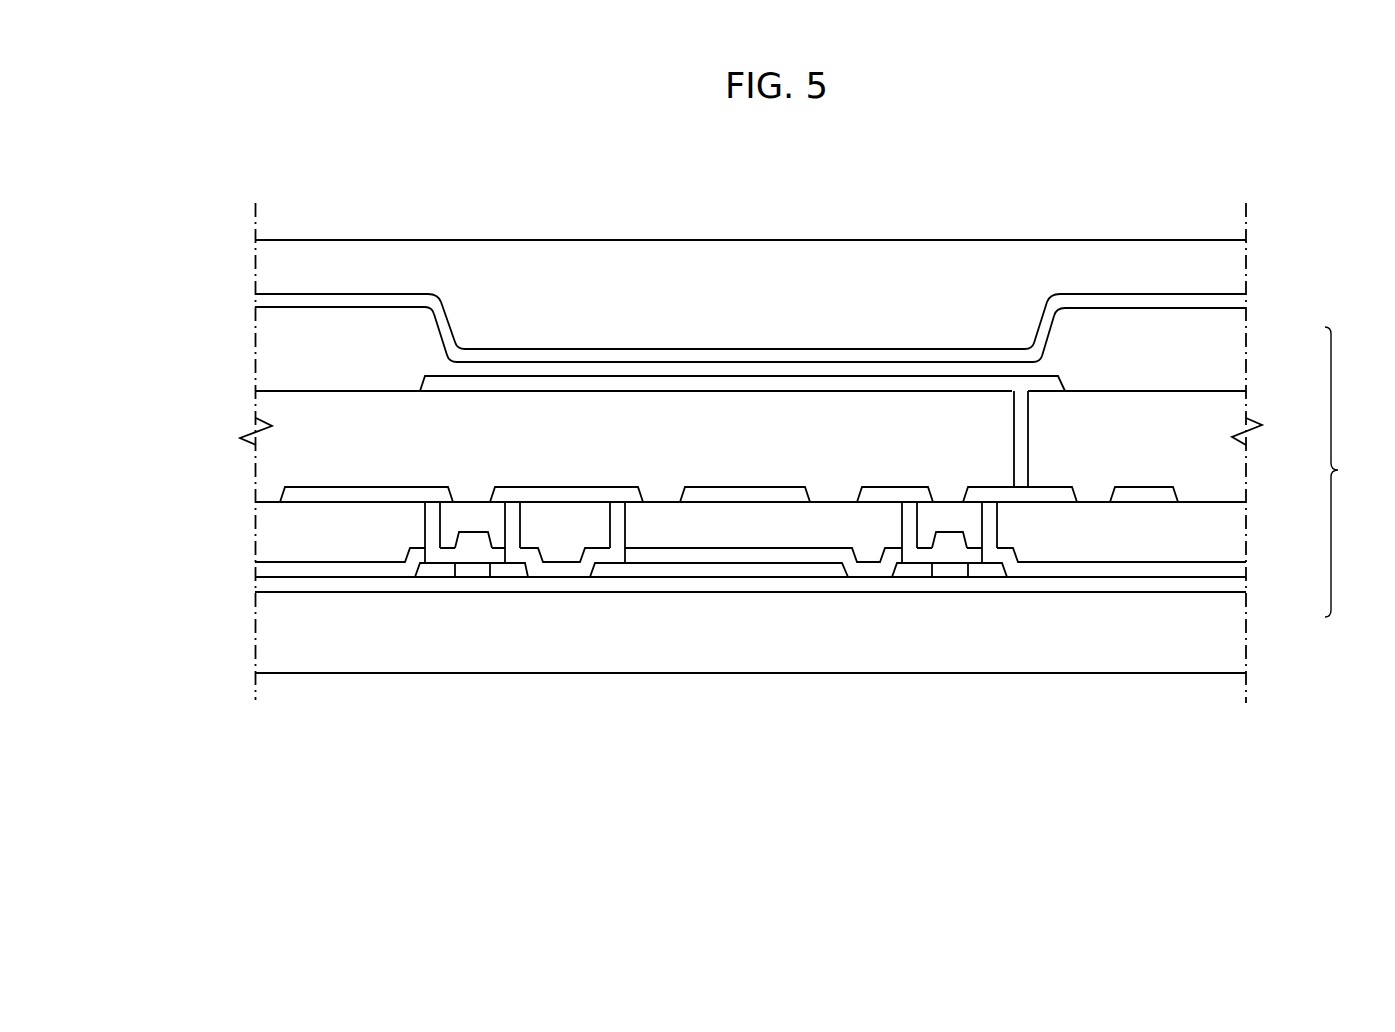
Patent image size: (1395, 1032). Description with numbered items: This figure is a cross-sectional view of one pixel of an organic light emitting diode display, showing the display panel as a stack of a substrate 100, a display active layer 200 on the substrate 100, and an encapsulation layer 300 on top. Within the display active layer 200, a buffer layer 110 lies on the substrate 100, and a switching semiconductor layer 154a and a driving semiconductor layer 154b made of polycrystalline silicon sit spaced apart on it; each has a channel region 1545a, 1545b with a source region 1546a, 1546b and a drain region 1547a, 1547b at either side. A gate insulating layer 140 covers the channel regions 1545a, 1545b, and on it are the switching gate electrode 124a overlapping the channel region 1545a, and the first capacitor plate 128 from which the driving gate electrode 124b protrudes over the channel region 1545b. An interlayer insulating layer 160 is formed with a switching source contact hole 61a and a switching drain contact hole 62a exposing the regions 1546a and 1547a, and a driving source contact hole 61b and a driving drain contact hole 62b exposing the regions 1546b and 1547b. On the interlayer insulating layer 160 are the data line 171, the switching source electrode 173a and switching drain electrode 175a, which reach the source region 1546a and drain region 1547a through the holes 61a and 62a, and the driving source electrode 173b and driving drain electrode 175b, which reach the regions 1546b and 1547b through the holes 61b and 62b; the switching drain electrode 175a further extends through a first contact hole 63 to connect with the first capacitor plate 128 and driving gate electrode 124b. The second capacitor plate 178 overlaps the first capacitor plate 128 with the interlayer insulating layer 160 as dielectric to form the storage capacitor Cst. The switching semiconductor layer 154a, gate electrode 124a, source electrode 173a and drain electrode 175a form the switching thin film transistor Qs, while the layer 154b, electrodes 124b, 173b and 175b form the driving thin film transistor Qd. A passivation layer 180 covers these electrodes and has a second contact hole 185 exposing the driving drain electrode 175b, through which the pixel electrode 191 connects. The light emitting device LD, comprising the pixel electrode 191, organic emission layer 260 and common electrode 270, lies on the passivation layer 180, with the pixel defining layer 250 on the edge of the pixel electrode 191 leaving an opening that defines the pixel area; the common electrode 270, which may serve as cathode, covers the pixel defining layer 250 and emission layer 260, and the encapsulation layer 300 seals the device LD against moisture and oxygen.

The substrate 100 is at (1218, 637).
The buffer layer 110 is at (1232, 585).
The gate insulating layer 140 is at (477, 552).
The interlayer insulating layer 160 is at (1218, 527).
The passivation layer 180 is at (1218, 462).
The second contact hole 185 is at (1030, 428).
The pixel electrode 191 is at (680, 388).
The organic emission layer 260 is at (748, 374).
The common electrode 270 is at (818, 357).
The pixel defining layer 250 is at (1218, 348).
The encapsulation layer 300 is at (1218, 263).
The display active layer 200 is at (1352, 472).
The light emitting device LD is at (750, 259).
The data line 171 is at (290, 503).
The switching source electrode 173a is at (380, 495).
The switching drain electrode 175a is at (566, 647).
The switching gate electrode 124a is at (454, 538).
The switching semiconductor layer 154a is at (476, 685).
The source region 1546a is at (435, 568).
The channel region 1545a is at (472, 568).
The drain region 1547a is at (512, 568).
The switching source contact hole 61a is at (433, 513).
The switching drain contact hole 62a is at (512, 503).
The first contact hole 63 is at (623, 512).
The first capacitor plate 128 is at (720, 570).
The second capacitor plate 178 is at (780, 494).
The storage capacitor Cst is at (719, 646).
The switching thin film transistor Qs is at (413, 506).
The driving source electrode 173b is at (878, 494).
The driving drain electrode 175b is at (1075, 646).
The driving gate electrode 124b is at (965, 540).
The driving semiconductor layer 154b is at (961, 684).
The source region 1546b is at (912, 568).
The channel region 1545b is at (948, 568).
The drain region 1547b is at (985, 568).
The driving source contact hole 61b is at (903, 513).
The driving drain contact hole 62b is at (985, 513).
The driving thin film transistor Qd is at (1001, 506).